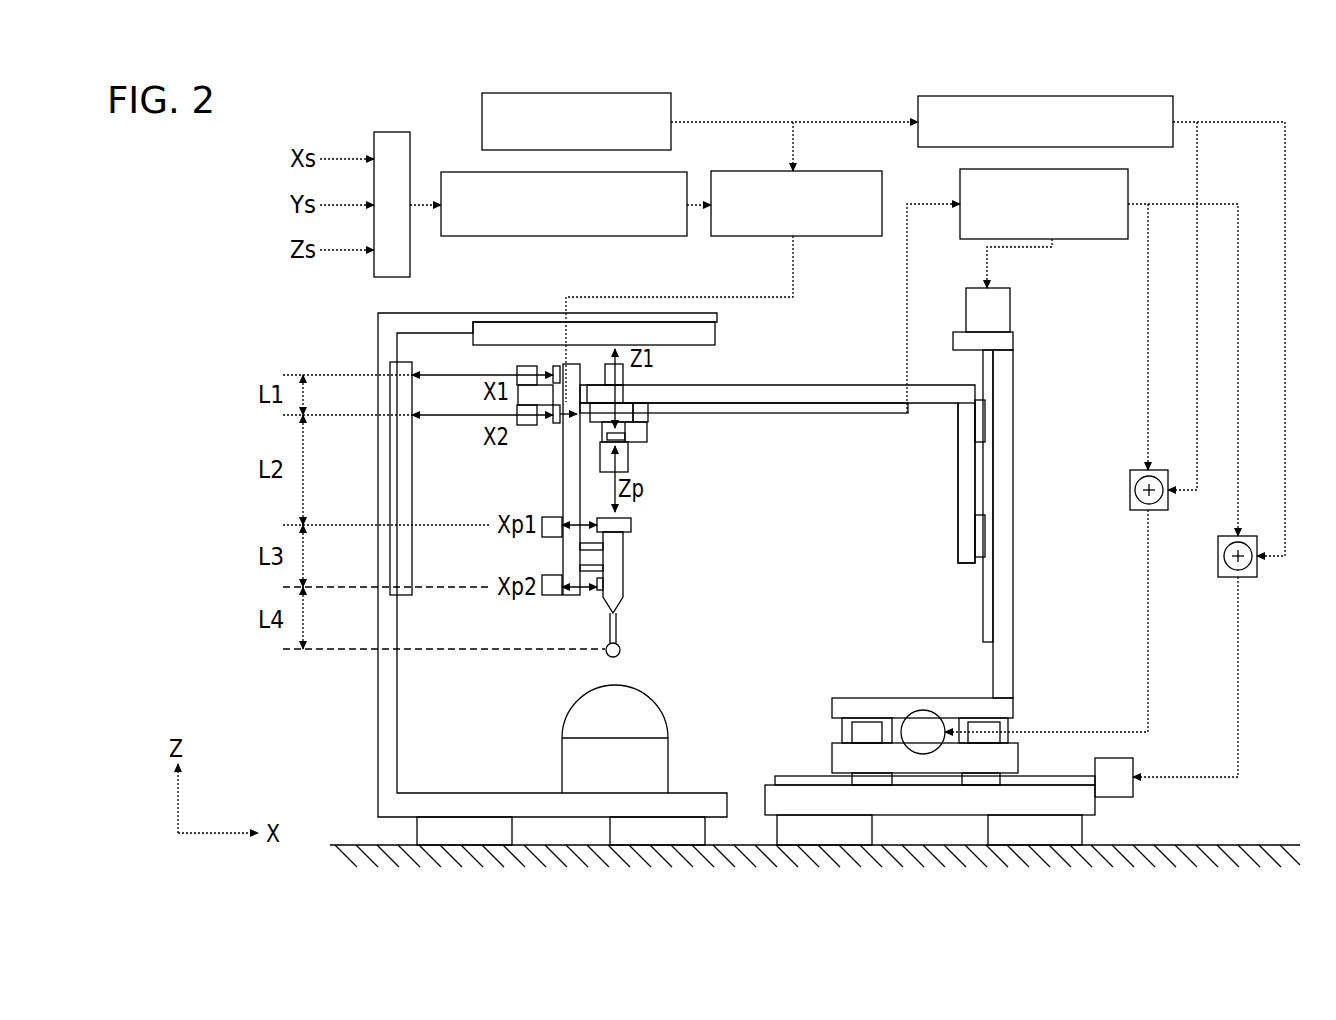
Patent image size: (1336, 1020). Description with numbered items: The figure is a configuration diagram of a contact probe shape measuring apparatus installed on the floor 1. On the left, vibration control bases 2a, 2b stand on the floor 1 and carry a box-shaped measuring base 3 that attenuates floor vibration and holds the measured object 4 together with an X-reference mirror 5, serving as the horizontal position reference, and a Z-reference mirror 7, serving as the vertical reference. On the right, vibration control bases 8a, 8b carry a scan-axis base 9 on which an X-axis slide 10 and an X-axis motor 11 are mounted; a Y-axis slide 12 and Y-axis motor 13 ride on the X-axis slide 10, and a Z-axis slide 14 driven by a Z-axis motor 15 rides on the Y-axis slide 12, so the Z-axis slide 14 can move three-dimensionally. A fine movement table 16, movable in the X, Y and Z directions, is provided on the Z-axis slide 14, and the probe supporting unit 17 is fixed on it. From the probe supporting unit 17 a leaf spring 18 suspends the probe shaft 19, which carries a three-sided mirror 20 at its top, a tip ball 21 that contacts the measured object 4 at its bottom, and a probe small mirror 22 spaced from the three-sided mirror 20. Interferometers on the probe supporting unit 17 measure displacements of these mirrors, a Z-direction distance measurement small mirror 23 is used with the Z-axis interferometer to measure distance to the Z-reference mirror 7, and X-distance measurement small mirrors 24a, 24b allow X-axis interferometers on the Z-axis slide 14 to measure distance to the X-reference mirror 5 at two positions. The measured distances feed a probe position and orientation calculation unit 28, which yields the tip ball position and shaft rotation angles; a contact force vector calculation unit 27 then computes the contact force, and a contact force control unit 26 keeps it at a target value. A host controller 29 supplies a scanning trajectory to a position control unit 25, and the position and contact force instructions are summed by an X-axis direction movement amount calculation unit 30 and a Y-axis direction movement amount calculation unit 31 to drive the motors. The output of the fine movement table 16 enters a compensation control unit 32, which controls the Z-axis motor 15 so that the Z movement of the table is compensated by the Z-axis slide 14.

The floor 1 is at (350, 843).
The vibration control base 2a is at (512, 828).
The vibration control base 2b is at (710, 828).
The measuring base 3 is at (378, 748).
The measured object 4 is at (566, 710).
The X-reference mirror 5 is at (408, 597).
The Z-reference mirror 7 is at (715, 338).
The vibration control base 8a is at (872, 832).
The vibration control base 8b is at (988, 832).
The scan-axis base 9 is at (1095, 805).
The X-axis slide 10 is at (1018, 755).
The X-axis motor 11 is at (1133, 762).
The Y-axis slide 12 is at (1013, 640).
The Y-axis motor 13 is at (923, 710).
The Z-axis slide 14 is at (958, 563).
The Z-axis motor 15 is at (1010, 310).
The fine movement table 16 is at (635, 402).
The probe supporting unit 17 is at (640, 446).
The leaf spring 18 is at (603, 547).
The probe shaft 19 is at (625, 580).
The three-sided mirror 20 is at (632, 522).
The tip ball 21 is at (621, 650).
The probe small mirror 22 is at (600, 590).
The Z-direction distance measurement small mirror 23 is at (647, 432).
The X-distance measurement small mirror 24a is at (553, 370).
The X-distance measurement small mirror 24b is at (553, 424).
The position control unit 25 is at (1173, 110).
The contact force control unit 26 is at (840, 237).
The contact force vector calculation unit 27 is at (556, 237).
The probe position and orientation calculation unit 28 is at (374, 132).
The host controller 29 is at (482, 120).
The X-axis direction movement amount calculation unit 30 is at (1218, 558).
The Y-axis direction movement amount calculation unit 31 is at (1130, 488).
The compensation control unit 32 is at (1093, 239).